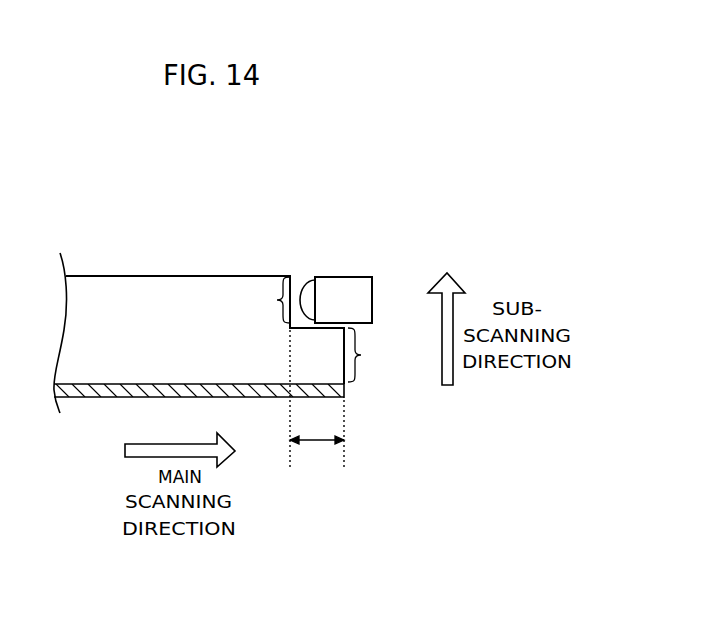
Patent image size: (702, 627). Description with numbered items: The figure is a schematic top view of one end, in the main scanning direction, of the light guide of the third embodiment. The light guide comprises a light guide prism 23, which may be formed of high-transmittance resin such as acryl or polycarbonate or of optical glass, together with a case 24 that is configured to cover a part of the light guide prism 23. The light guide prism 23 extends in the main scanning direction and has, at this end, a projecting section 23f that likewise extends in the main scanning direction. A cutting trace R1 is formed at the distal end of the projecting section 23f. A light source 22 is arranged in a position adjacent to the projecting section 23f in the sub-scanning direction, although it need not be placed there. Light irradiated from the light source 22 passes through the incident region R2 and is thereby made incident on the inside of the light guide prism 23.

The light source 22 is at (342, 298).
The light guide prism 23 is at (133, 310).
The projecting section 23f is at (317, 402).
The case 24 is at (88, 386).
The cutting trace R1 is at (369, 355).
The incident region R2 is at (266, 300).